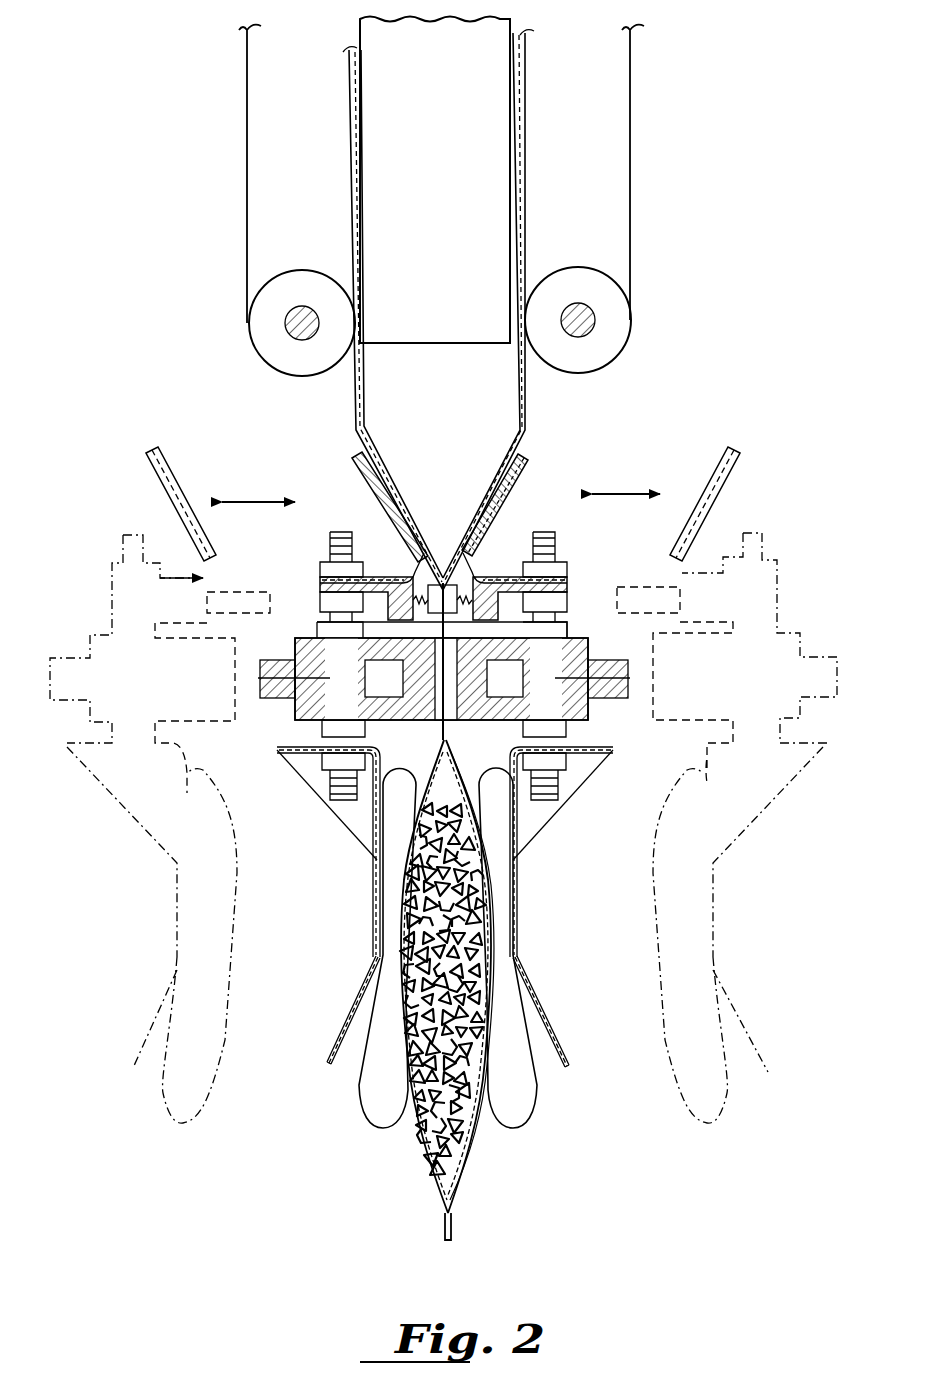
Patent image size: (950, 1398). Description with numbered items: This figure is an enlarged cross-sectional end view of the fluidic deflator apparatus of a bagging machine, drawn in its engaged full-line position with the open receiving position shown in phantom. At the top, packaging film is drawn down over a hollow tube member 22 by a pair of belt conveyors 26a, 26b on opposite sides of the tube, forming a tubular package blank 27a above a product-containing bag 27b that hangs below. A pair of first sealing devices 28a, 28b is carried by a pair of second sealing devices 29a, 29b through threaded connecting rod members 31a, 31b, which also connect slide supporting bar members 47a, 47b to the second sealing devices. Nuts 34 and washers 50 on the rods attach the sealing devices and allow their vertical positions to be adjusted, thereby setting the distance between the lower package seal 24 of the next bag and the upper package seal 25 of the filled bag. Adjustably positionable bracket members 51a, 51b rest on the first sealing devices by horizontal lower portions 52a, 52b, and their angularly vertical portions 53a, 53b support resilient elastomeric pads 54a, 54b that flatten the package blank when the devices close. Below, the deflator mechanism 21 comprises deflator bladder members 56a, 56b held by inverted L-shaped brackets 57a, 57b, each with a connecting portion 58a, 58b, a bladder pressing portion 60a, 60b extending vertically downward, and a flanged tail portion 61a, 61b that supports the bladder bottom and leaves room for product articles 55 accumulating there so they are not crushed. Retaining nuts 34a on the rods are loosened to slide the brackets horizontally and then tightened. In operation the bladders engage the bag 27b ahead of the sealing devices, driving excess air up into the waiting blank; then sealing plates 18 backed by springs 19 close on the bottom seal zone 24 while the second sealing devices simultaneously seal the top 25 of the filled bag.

The sealing plates 18 is at (506, 682).
The springs 19 is at (384, 682).
The deflator mechanism 21 is at (395, 1172).
The hollow tube member 22 is at (485, 130).
The lower package seal 24 is at (470, 573).
The upper package seal 25 is at (450, 700).
The belt conveyor 26a is at (245, 165).
The belt conveyor 26b is at (634, 128).
The package blank 27a is at (523, 372).
The product-containing bag 27b is at (488, 1010).
The first sealing device 28a is at (145, 525).
The first sealing device 28b is at (713, 573).
The second sealing device 29a is at (90, 622).
The second sealing device 29b is at (583, 643).
The connecting rod member 31a is at (330, 553).
The connecting rod member 31b is at (550, 532).
The nuts 34 is at (305, 595).
The retaining nuts 34a is at (330, 767).
The slide supporting bar member 47a is at (282, 693).
The slide supporting bar member 47b is at (617, 690).
The washers 50 is at (320, 588).
The bracket member 51a is at (353, 468).
The bracket member 51b is at (540, 460).
The horizontal lower portion 52a is at (380, 577).
The horizontal lower portion 52b is at (510, 580).
The angularly vertical portion 53a is at (370, 487).
The angularly vertical portion 53b is at (513, 490).
The resilient elastomeric pad 54a is at (358, 436).
The resilient elastomeric pad 54b is at (517, 445).
The product articles 55 is at (473, 1150).
The deflator bladder member 56a is at (357, 1105).
The deflator bladder member 56b is at (520, 1112).
The bracket 57a is at (372, 858).
The bracket 57b is at (521, 852).
The connecting portion 58a is at (327, 750).
The connecting portion 58b is at (597, 753).
The bladder pressing portion 60a is at (375, 915).
The bladder pressing portion 60b is at (515, 918).
The flanged tail portion 61a is at (337, 1035).
The flanged tail portion 61b is at (555, 1040).